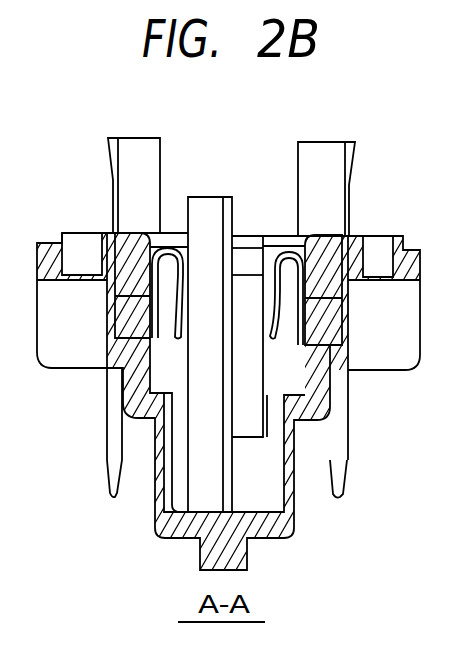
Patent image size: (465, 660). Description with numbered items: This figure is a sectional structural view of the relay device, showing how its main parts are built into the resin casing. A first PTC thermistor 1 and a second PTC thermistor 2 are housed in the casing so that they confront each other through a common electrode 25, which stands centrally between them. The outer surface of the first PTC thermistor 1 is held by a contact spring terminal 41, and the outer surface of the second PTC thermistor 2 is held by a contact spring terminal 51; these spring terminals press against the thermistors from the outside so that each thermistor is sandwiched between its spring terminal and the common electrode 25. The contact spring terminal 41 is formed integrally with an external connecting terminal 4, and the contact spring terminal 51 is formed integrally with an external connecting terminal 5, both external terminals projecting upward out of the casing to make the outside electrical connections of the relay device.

The first PTC thermistor 1 is at (195, 463).
The second PTC thermistor 2 is at (252, 419).
The external connecting terminal 4 is at (138, 147).
The contact spring terminal 41 is at (165, 247).
The external connecting terminal 5 is at (323, 155).
The contact spring terminal 51 is at (283, 247).
The common electrode 25 is at (225, 197).